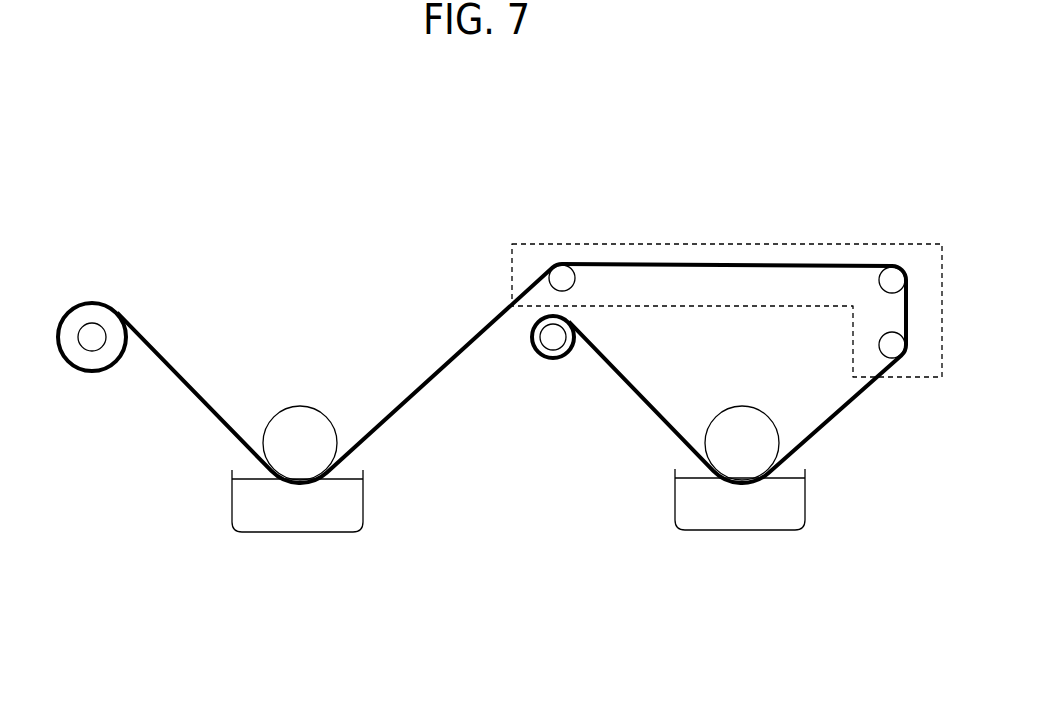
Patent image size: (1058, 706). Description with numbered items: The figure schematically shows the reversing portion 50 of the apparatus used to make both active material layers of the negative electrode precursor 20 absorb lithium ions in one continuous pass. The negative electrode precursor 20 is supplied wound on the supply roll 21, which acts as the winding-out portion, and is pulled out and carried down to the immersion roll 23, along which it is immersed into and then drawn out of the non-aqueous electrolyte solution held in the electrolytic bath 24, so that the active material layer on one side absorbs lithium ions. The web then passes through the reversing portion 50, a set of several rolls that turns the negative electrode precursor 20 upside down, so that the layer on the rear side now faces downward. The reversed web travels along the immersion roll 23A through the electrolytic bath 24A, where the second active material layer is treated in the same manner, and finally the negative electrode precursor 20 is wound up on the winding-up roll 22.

The negative electrode precursor 20 is at (163, 355).
The supply roll 21 is at (99, 322).
The winding-up roll 22 is at (550, 343).
The immersion roll 23 is at (310, 422).
The immersion roll 23A is at (755, 420).
The electrolytic bath 24 is at (363, 523).
The electrolytic bath 24A is at (805, 510).
The reversing portion 50 is at (842, 243).